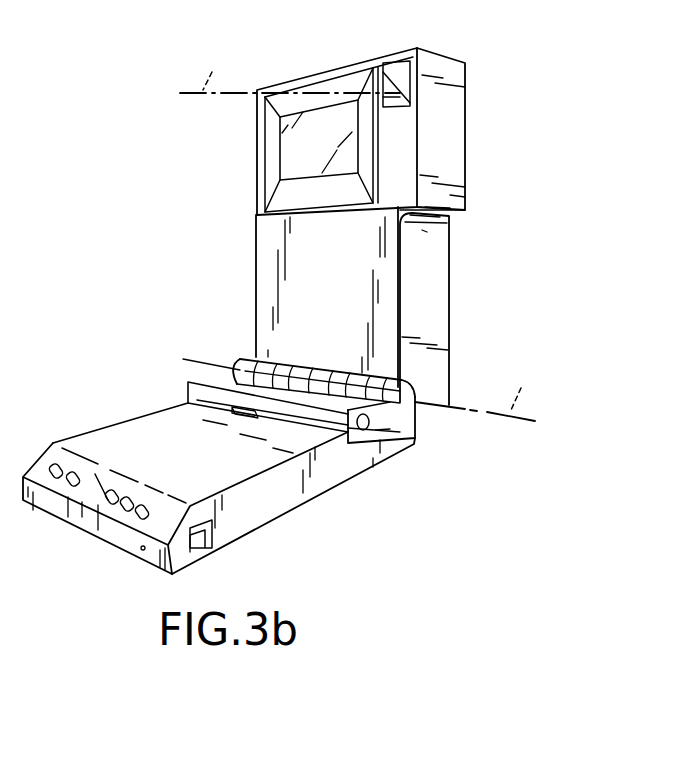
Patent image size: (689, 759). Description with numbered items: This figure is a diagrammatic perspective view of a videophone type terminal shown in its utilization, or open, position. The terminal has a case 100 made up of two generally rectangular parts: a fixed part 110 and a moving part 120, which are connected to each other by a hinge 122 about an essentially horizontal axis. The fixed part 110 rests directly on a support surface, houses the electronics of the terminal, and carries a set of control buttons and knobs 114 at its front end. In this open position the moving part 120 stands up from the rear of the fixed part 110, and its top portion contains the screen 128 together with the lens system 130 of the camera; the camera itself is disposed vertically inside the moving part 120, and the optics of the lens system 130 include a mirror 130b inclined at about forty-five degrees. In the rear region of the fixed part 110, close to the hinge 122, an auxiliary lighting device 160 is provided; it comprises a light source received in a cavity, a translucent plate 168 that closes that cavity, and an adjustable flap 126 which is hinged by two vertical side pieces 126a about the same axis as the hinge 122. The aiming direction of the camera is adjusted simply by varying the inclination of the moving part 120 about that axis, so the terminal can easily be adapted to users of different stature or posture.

The case 100 is at (218, 321).
The fixed part 110 is at (97, 441).
The control buttons and knobs 114 is at (108, 503).
The moving part 120 is at (438, 285).
The hinge 122 is at (437, 415).
The adjustable flap 126 is at (233, 383).
The vertical side pieces 126a is at (393, 425).
The screen 128 is at (297, 162).
The lens system 130 is at (430, 88).
The mirror 130b is at (405, 60).
The auxiliary lighting device 160 is at (167, 380).
The translucent plate 168 is at (320, 415).